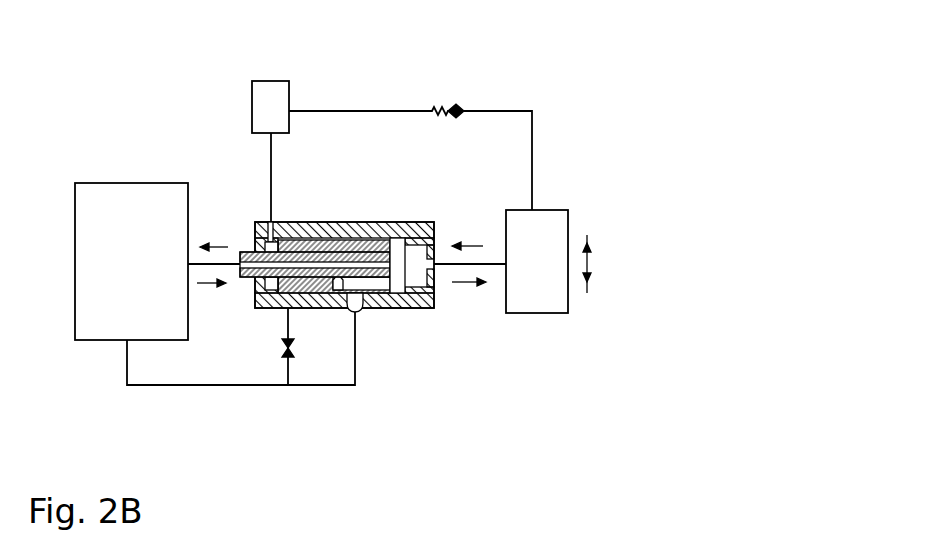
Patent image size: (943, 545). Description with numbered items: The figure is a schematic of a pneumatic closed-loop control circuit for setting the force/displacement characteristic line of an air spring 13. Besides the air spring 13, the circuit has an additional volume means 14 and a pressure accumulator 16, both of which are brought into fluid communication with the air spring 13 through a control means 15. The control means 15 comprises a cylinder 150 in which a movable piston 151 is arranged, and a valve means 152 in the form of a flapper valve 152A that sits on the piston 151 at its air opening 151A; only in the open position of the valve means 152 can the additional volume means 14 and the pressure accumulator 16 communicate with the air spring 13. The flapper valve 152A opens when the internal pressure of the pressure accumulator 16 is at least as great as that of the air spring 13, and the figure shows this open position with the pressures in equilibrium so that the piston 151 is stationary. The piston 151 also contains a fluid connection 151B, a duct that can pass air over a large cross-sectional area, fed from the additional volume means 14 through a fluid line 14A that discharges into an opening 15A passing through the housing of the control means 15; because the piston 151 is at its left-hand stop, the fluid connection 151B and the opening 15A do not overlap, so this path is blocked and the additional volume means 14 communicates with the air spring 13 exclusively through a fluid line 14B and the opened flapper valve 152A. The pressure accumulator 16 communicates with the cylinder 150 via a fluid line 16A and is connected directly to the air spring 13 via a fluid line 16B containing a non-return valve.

The air spring 13 is at (558, 225).
The additional volume means 14 is at (101, 195).
The fluid line 14A is at (224, 388).
The fluid line 14B is at (236, 255).
The control means 15 is at (354, 268).
The opening 15A is at (357, 312).
The pressure accumulator 16 is at (274, 95).
The fluid line 16A is at (270, 160).
The fluid line 16B is at (362, 110).
The cylinder 150 is at (396, 240).
The piston 151 is at (344, 231).
The air opening 151A is at (375, 238).
The fluid connection of the piston 151B is at (376, 288).
The valve means 152 is at (399, 236).
The flapper valve 152A is at (390, 263).